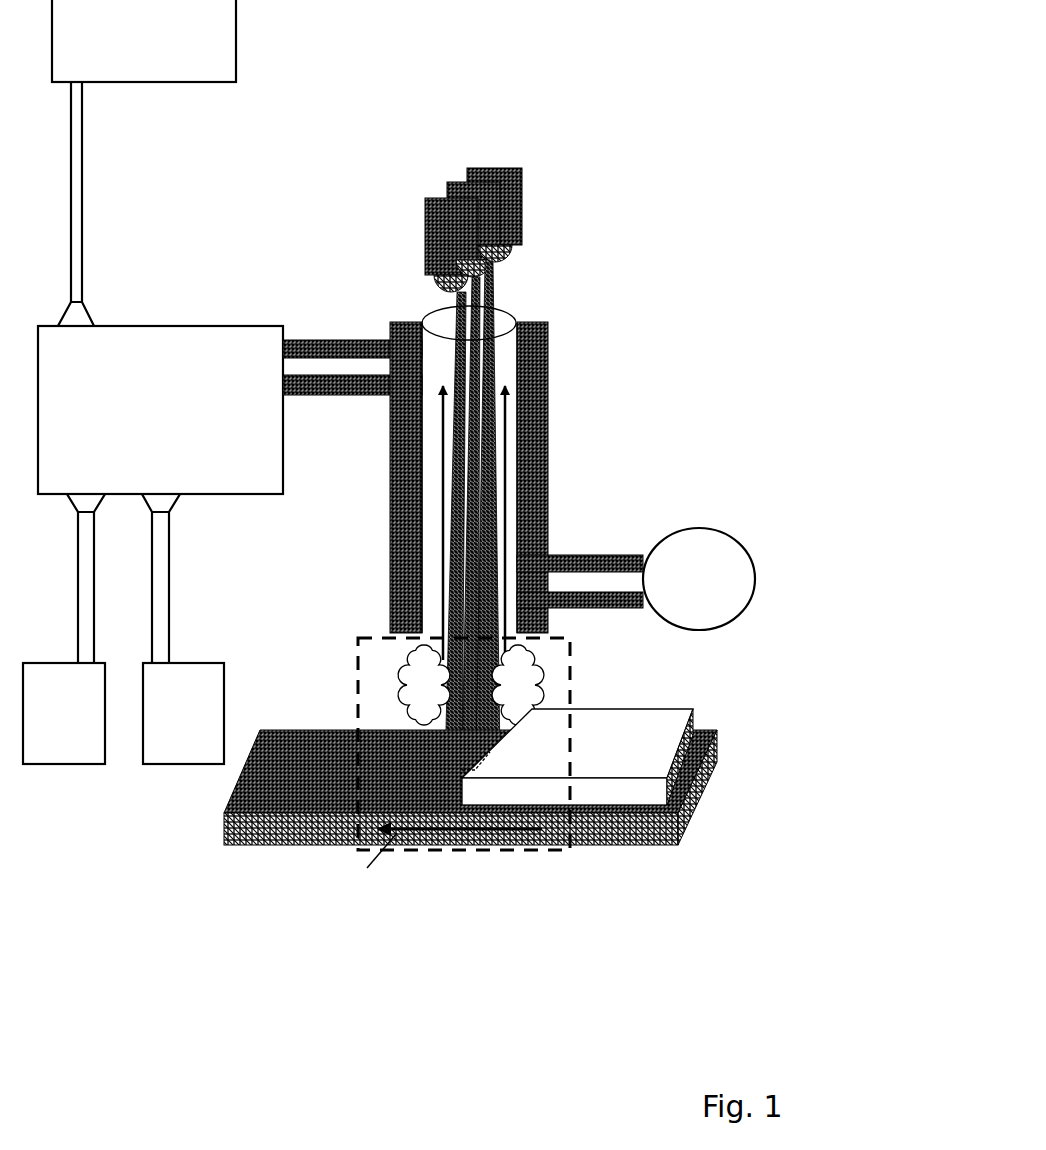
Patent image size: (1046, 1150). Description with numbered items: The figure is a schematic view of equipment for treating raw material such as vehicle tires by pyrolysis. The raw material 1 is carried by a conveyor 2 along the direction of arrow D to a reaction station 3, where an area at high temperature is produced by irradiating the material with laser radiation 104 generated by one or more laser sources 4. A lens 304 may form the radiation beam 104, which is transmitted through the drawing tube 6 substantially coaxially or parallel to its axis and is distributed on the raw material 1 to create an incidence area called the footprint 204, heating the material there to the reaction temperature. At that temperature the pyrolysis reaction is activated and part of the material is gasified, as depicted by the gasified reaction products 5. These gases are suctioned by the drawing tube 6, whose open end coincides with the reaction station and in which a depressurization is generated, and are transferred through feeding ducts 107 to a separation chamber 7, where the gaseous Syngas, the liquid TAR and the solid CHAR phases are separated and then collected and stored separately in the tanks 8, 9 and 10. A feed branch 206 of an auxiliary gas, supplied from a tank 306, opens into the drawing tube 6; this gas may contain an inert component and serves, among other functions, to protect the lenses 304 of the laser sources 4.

The raw material 1 is at (640, 750).
The conveyor 2 is at (645, 845).
The reaction station 3 is at (465, 852).
The laser source 4 is at (523, 177).
The gasified reaction products 5 is at (510, 693).
The drawing tube 6 is at (402, 547).
The separation chamber 7 is at (160, 410).
The tank 8 is at (64, 629).
The tank 9 is at (183, 629).
The tank 10 is at (144, 163).
The laser radiation 104 is at (487, 445).
The feeding duct 107 is at (318, 347).
The footprint 204 is at (470, 770).
The feed branch 206 is at (582, 582).
The lens 304 is at (493, 317).
The tank 306 is at (699, 579).